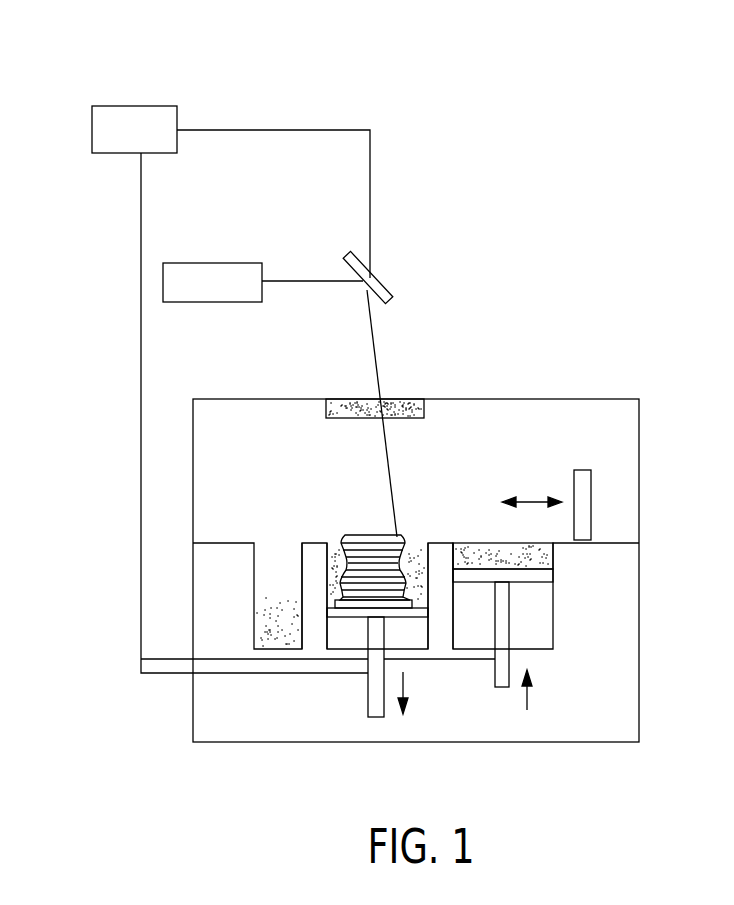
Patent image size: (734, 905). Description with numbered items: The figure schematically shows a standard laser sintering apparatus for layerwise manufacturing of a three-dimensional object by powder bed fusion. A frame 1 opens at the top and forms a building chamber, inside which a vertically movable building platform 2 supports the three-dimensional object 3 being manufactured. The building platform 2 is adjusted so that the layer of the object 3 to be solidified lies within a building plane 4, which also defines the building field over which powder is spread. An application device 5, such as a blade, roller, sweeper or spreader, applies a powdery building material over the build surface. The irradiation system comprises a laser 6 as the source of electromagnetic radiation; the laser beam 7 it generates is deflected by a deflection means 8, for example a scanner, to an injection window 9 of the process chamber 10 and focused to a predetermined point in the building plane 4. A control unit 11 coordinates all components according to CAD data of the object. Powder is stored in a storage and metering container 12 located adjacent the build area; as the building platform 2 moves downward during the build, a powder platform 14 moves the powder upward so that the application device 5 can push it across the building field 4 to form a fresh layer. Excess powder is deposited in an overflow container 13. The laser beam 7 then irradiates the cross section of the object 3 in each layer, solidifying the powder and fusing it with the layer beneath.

The frame 1 is at (428, 637).
The building platform 2 is at (407, 620).
The three-dimensional object 3 is at (352, 535).
The building plane 4 is at (313, 541).
The application device 5 is at (583, 497).
The laser 6 is at (204, 263).
The laser beam 7 is at (305, 281).
The deflection means 8 is at (390, 278).
The injection window 9 is at (400, 405).
The process chamber 10 is at (639, 660).
The control unit 11 is at (133, 106).
The storage and metering container 12 is at (553, 580).
The overflow container 13 is at (282, 580).
The powder platform 14 is at (527, 584).